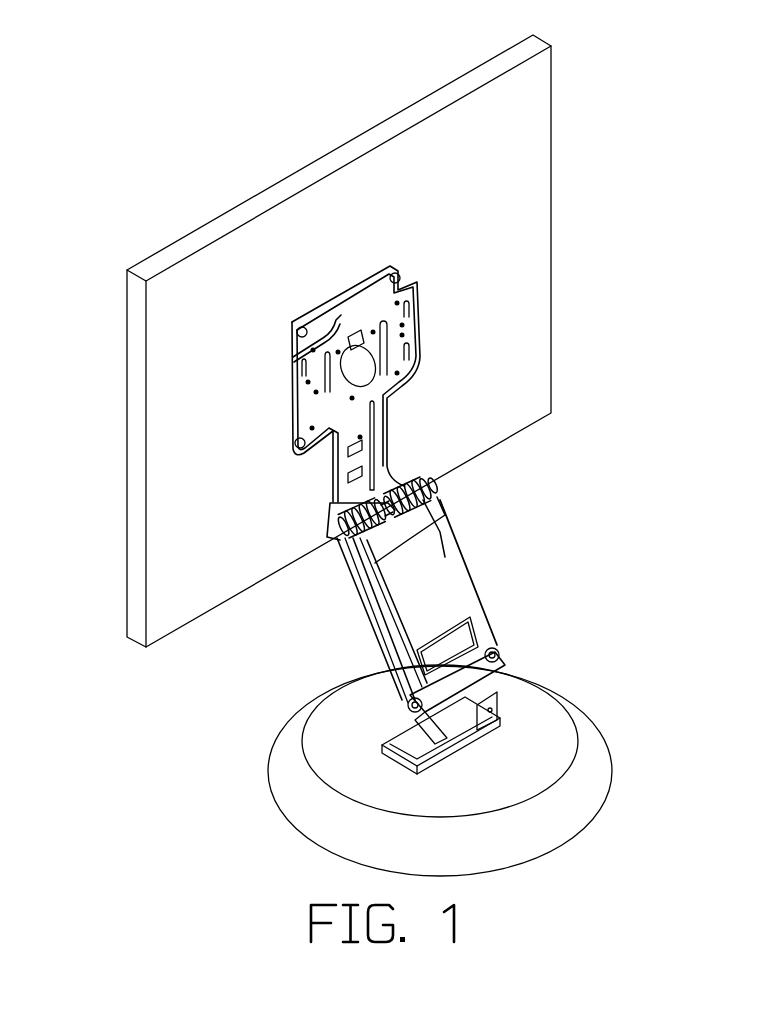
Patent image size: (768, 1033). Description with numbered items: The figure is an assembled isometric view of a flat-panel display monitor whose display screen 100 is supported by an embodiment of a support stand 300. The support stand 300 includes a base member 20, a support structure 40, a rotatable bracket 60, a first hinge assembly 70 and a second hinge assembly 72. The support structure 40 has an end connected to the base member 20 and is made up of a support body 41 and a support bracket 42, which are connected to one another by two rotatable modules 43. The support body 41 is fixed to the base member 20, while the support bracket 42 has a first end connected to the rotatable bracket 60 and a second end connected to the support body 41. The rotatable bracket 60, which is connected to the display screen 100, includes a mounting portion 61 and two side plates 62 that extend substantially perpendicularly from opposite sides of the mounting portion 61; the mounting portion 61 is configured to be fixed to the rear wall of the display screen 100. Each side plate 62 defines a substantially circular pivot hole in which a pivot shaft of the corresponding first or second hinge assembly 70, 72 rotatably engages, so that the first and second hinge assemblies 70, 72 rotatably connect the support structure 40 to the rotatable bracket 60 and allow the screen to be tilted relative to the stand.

The display screen 100 is at (528, 216).
The support stand 300 is at (657, 400).
The base member 20 is at (592, 788).
The support structure 40 is at (601, 529).
The support body 41 is at (435, 706).
The support bracket 42 is at (447, 567).
The rotatable module 43 is at (500, 647).
The rotatable bracket 60 is at (356, 403).
The mounting portion 61 is at (335, 398).
The side plate 62 is at (333, 520).
The first hinge assembly 70 is at (355, 519).
The second hinge assembly 72 is at (440, 484).